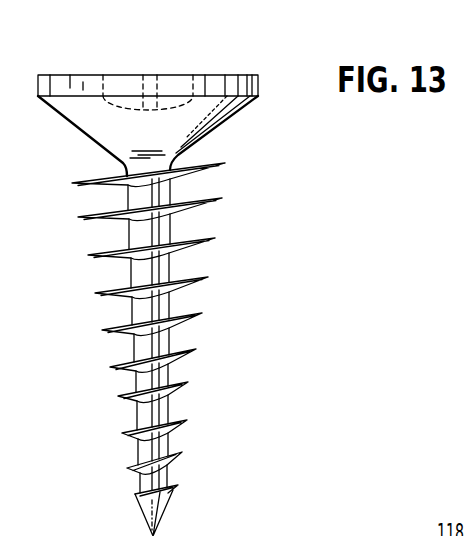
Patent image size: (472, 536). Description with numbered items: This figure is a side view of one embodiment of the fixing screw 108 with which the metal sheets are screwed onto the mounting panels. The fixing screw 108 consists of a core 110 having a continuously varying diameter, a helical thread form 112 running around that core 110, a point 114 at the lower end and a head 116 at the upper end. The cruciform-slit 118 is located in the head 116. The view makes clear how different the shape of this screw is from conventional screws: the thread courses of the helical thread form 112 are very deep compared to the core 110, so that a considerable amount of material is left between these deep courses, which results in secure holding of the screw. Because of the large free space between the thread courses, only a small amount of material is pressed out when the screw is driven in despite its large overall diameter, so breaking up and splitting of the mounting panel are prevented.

The fixing screw 108 is at (240, 240).
The core 110 is at (130, 310).
The helical thread form 112 is at (132, 367).
The point 114 is at (168, 512).
The head 116 is at (97, 118).
The cruciform-slit 118 is at (148, 75).